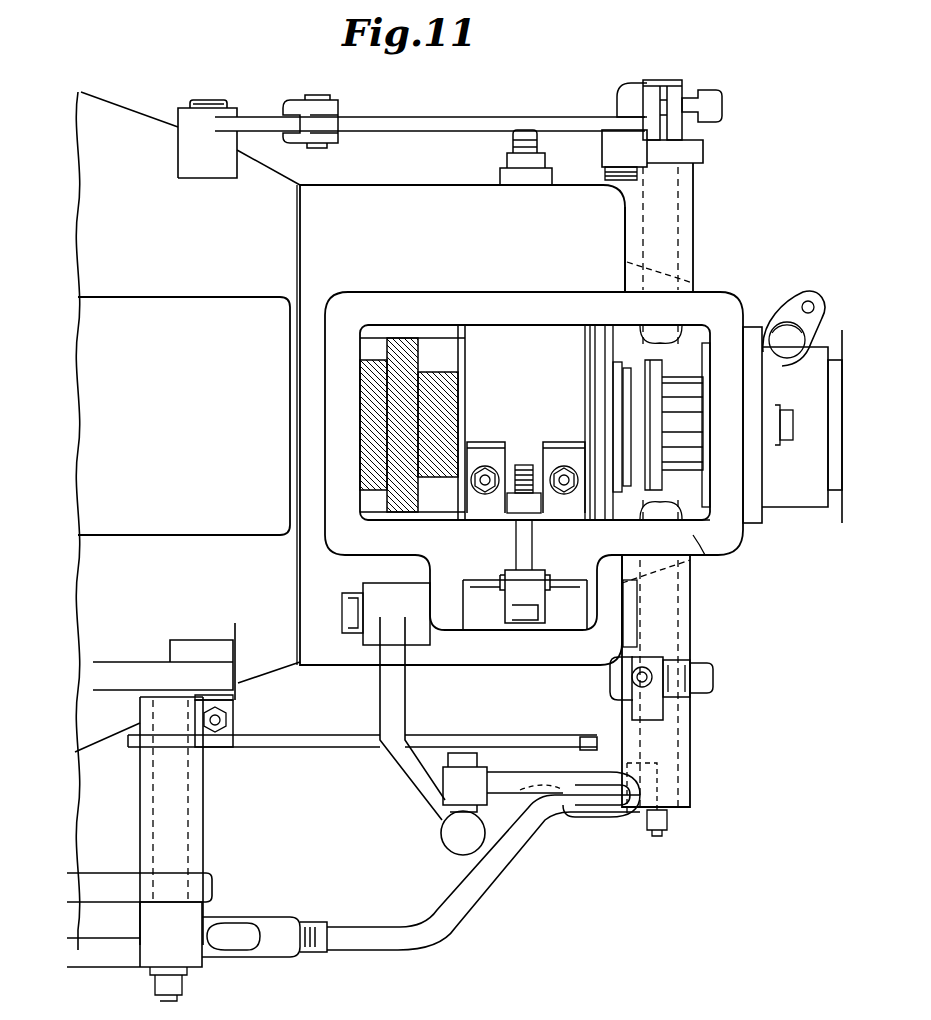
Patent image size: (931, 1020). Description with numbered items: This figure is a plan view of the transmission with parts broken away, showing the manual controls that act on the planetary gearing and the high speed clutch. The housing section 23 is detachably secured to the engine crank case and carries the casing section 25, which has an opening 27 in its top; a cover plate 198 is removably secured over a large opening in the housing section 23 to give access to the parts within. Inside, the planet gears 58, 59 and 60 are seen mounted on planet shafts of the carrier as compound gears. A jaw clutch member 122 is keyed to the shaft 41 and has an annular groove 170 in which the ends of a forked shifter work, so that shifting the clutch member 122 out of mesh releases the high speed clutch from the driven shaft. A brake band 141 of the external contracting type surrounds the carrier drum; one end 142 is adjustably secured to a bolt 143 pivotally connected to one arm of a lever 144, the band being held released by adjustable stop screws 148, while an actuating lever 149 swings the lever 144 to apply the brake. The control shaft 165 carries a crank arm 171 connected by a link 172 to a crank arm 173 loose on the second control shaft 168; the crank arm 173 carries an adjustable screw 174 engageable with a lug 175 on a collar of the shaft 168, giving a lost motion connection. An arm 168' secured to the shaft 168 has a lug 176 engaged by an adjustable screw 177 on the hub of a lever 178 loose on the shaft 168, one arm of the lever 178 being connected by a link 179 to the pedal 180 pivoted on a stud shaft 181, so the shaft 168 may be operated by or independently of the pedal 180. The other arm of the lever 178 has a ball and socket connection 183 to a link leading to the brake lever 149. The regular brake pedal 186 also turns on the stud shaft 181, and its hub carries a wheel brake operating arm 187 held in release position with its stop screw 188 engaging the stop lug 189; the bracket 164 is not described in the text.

The housing section 23 is at (294, 197).
The casing section 25 is at (600, 240).
The opening 27 is at (477, 328).
The shaft 41 is at (684, 450).
The planet gear 58 is at (372, 428).
The planet gear 59 is at (410, 363).
The planet gear 60 is at (443, 430).
The jaw clutch member 122 is at (655, 404).
The brake band 141 is at (535, 338).
The end of brake band 142 is at (494, 503).
The bolt 143 is at (530, 560).
The lever 144 is at (485, 615).
The adjustable stop screw 148 is at (512, 147).
The actuating lever 149 is at (405, 722).
The bracket 164 is at (116, 662).
The control shaft 165 is at (222, 84).
The second control shaft 168 is at (697, 316).
The arm 168' is at (709, 688).
The annular groove 170 is at (623, 400).
The crank arm 171 is at (252, 120).
The link 172 is at (410, 120).
The crank arm 173 is at (668, 162).
The screw 174 is at (716, 106).
The lug 175 is at (622, 95).
The lug 176 is at (611, 680).
The adjustable screw 177 is at (690, 677).
The lever 178 is at (692, 780).
The link 179 is at (482, 902).
The pedal 180 is at (105, 967).
The stud shaft 181 is at (185, 832).
The ball and socket connection 183 is at (452, 836).
The brake pedal 186 is at (90, 872).
The wheel brake operating arm 187 is at (318, 748).
The stop screw 188 is at (222, 725).
The stop lug 189 is at (238, 703).
The cover plate 198 is at (140, 322).